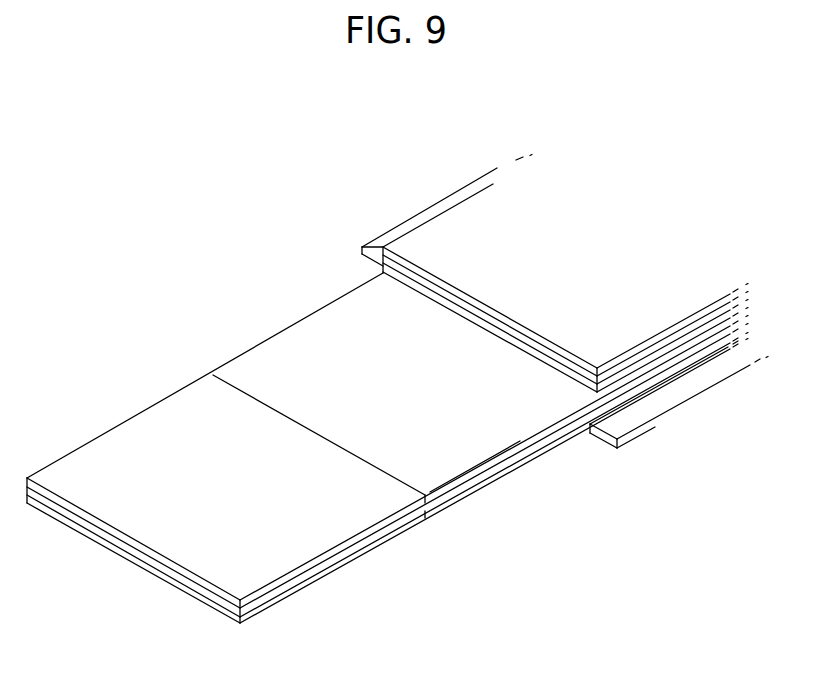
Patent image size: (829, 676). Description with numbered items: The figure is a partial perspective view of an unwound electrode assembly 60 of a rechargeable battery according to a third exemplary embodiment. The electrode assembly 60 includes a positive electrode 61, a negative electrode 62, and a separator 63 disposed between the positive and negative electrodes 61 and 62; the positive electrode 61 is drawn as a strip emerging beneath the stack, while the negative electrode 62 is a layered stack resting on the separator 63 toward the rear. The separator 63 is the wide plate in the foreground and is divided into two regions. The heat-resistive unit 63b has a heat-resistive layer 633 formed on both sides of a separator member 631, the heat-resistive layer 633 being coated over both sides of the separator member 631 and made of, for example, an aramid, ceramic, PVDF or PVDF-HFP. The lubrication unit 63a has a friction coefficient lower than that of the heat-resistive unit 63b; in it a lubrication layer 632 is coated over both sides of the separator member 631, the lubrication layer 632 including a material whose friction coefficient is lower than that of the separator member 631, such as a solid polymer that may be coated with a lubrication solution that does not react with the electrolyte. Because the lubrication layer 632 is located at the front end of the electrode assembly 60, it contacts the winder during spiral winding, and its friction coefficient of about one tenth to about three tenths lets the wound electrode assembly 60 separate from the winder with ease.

The electrode assembly 60 is at (242, 187).
The positive electrode 61 is at (587, 438).
The negative electrode 62 is at (462, 215).
The separator 63 is at (253, 343).
The lubrication unit 63a is at (143, 422).
The heat-resistive unit 63b is at (327, 317).
The separator member 631 is at (393, 527).
The lubrication layer 632 is at (320, 557).
The heat-resistive layer 633 is at (487, 462).